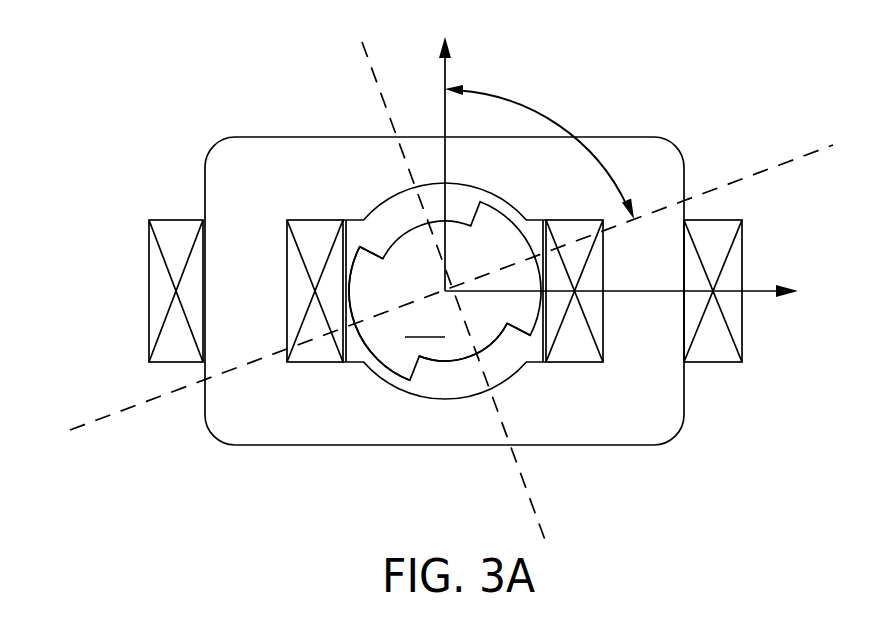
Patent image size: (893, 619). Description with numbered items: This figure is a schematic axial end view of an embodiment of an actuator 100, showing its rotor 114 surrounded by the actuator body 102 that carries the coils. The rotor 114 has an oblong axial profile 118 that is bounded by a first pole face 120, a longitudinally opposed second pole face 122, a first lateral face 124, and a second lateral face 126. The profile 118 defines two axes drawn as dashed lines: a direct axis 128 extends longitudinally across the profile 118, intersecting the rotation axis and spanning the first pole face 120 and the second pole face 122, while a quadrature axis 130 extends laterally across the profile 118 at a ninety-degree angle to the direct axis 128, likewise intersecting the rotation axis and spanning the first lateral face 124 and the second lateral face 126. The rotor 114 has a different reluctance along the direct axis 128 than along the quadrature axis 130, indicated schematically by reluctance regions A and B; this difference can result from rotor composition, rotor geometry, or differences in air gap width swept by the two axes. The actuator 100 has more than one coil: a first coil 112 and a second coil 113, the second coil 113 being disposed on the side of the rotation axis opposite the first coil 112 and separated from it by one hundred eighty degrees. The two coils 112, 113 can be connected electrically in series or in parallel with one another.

The actuator 100 is at (431, 301).
The stator housing 102 is at (635, 413).
The first coil 112 is at (157, 363).
The second coil 113 is at (717, 365).
The rotor 114 is at (436, 313).
The axial profile 118 is at (425, 324).
The first pole face 120 is at (533, 337).
The second pole face 122 is at (375, 361).
The first lateral face 124 is at (394, 240).
The second lateral face 126 is at (448, 363).
The direct axis 128 is at (790, 162).
The quadrature axis 130 is at (533, 507).